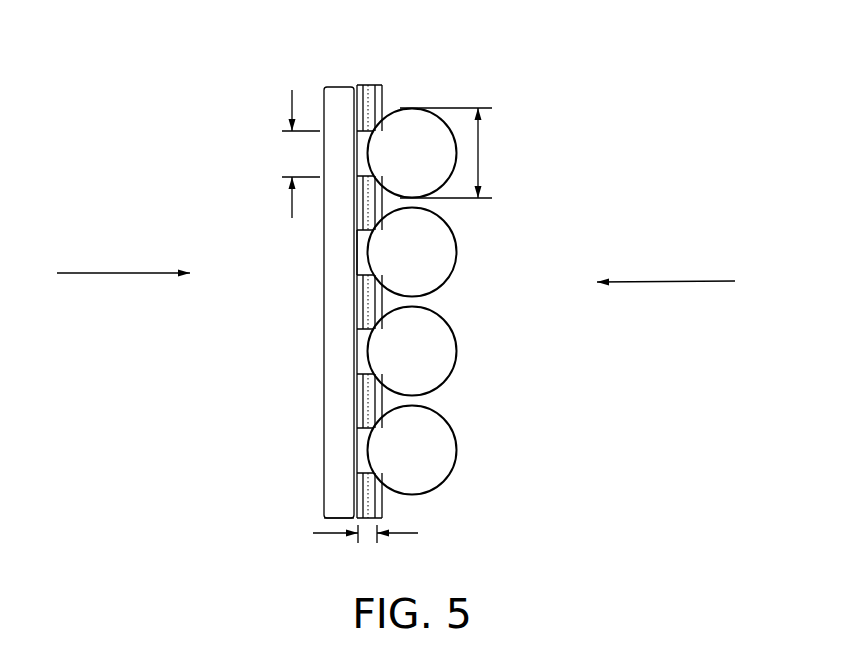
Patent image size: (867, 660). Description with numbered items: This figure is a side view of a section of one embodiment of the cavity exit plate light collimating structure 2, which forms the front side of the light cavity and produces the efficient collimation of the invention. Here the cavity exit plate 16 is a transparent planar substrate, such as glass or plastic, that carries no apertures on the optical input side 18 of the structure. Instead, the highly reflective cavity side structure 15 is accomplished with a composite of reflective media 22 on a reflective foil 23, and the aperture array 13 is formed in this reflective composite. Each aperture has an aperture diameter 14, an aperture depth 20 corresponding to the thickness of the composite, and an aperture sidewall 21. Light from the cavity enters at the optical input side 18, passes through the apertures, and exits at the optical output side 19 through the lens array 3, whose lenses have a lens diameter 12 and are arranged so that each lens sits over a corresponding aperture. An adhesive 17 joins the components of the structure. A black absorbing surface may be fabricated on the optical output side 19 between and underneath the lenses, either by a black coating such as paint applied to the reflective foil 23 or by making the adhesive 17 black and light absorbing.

The cavity exit plate light collimating structure 2 is at (540, 70).
The lens array 3 is at (453, 437).
The lens diameter 12 is at (482, 153).
The aperture array 13 is at (353, 260).
The aperture diameter 14 is at (293, 208).
The highly reflective cavity side structure 15 is at (357, 497).
The cavity exit plate 16 is at (337, 91).
The adhesive 17 is at (383, 98).
The optical input side 18 is at (105, 276).
The optical output side 19 is at (683, 285).
The aperture depth 20 is at (408, 533).
The aperture sidewall 21 is at (357, 231).
The reflective media 22 is at (356, 88).
The reflective foil 23 is at (372, 88).